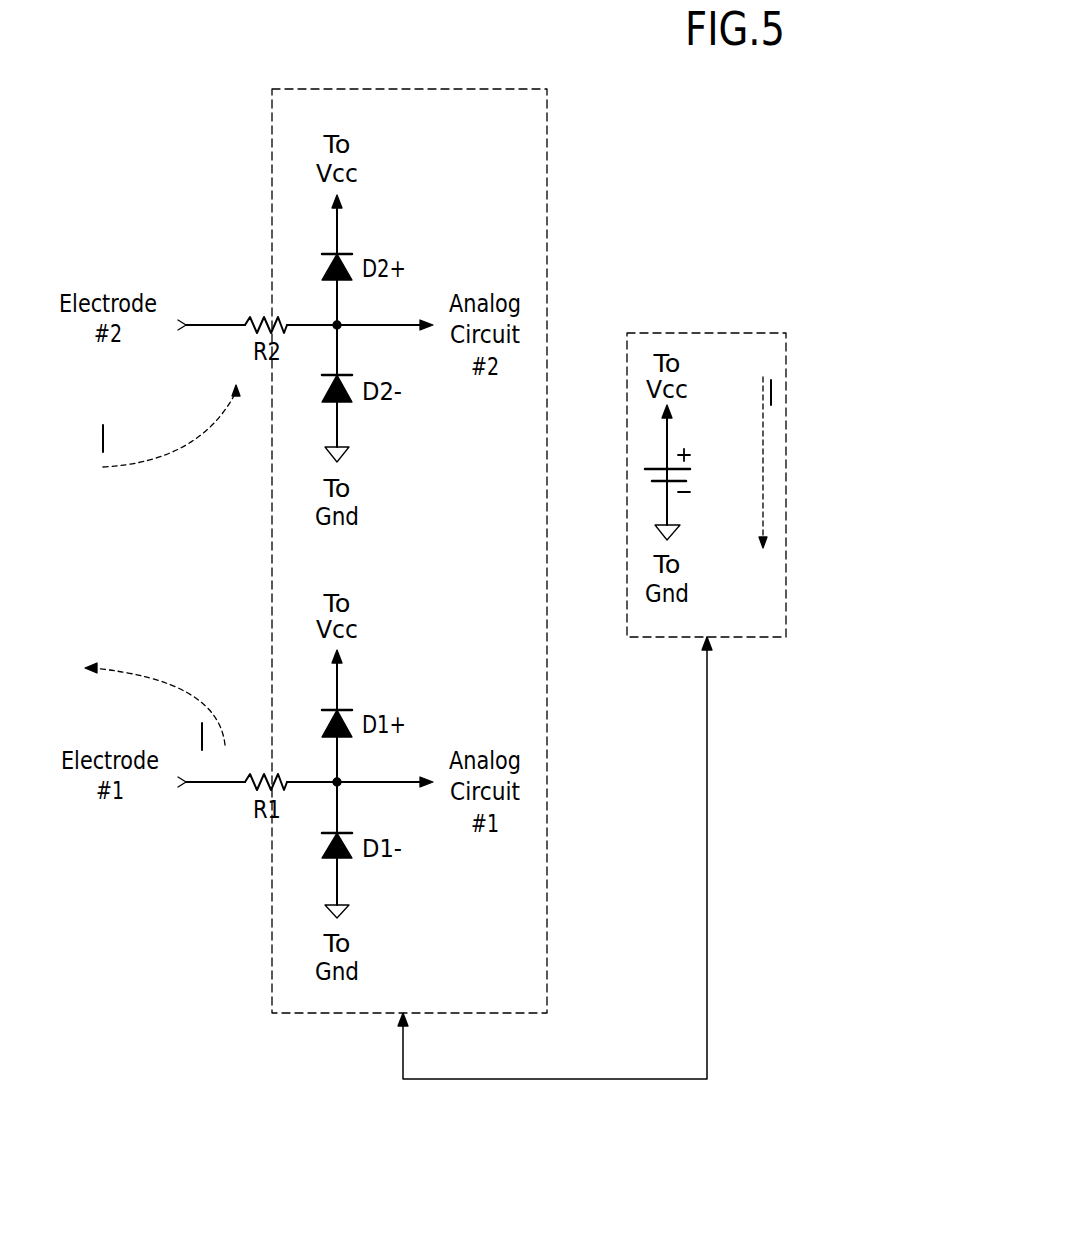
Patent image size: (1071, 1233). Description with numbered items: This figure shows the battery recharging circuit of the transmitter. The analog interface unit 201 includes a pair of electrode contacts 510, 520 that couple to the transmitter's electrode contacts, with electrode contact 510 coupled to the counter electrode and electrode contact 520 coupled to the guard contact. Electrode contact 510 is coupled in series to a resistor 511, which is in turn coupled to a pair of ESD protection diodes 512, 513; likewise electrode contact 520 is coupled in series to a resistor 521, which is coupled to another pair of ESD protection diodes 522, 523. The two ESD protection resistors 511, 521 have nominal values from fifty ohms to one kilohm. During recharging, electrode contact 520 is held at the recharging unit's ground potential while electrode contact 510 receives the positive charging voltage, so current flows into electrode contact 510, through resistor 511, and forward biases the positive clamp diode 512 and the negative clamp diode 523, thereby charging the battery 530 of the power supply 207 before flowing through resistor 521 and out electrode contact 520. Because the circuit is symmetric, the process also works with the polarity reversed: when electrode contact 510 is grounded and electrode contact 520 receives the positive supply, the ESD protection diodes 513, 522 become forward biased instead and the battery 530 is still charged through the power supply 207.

The analog interface unit 201 is at (467, 89).
The power supply 207 is at (707, 333).
The electrode contact 510 is at (203, 325).
The resistor 511 is at (265, 317).
The ESD protection diode 512 is at (345, 254).
The ESD protection diode 513 is at (345, 402).
The electrode contact 520 is at (198, 790).
The resistor 521 is at (257, 775).
The ESD protection diode 522 is at (345, 710).
The ESD protection diode 523 is at (345, 858).
The battery 530 is at (683, 432).